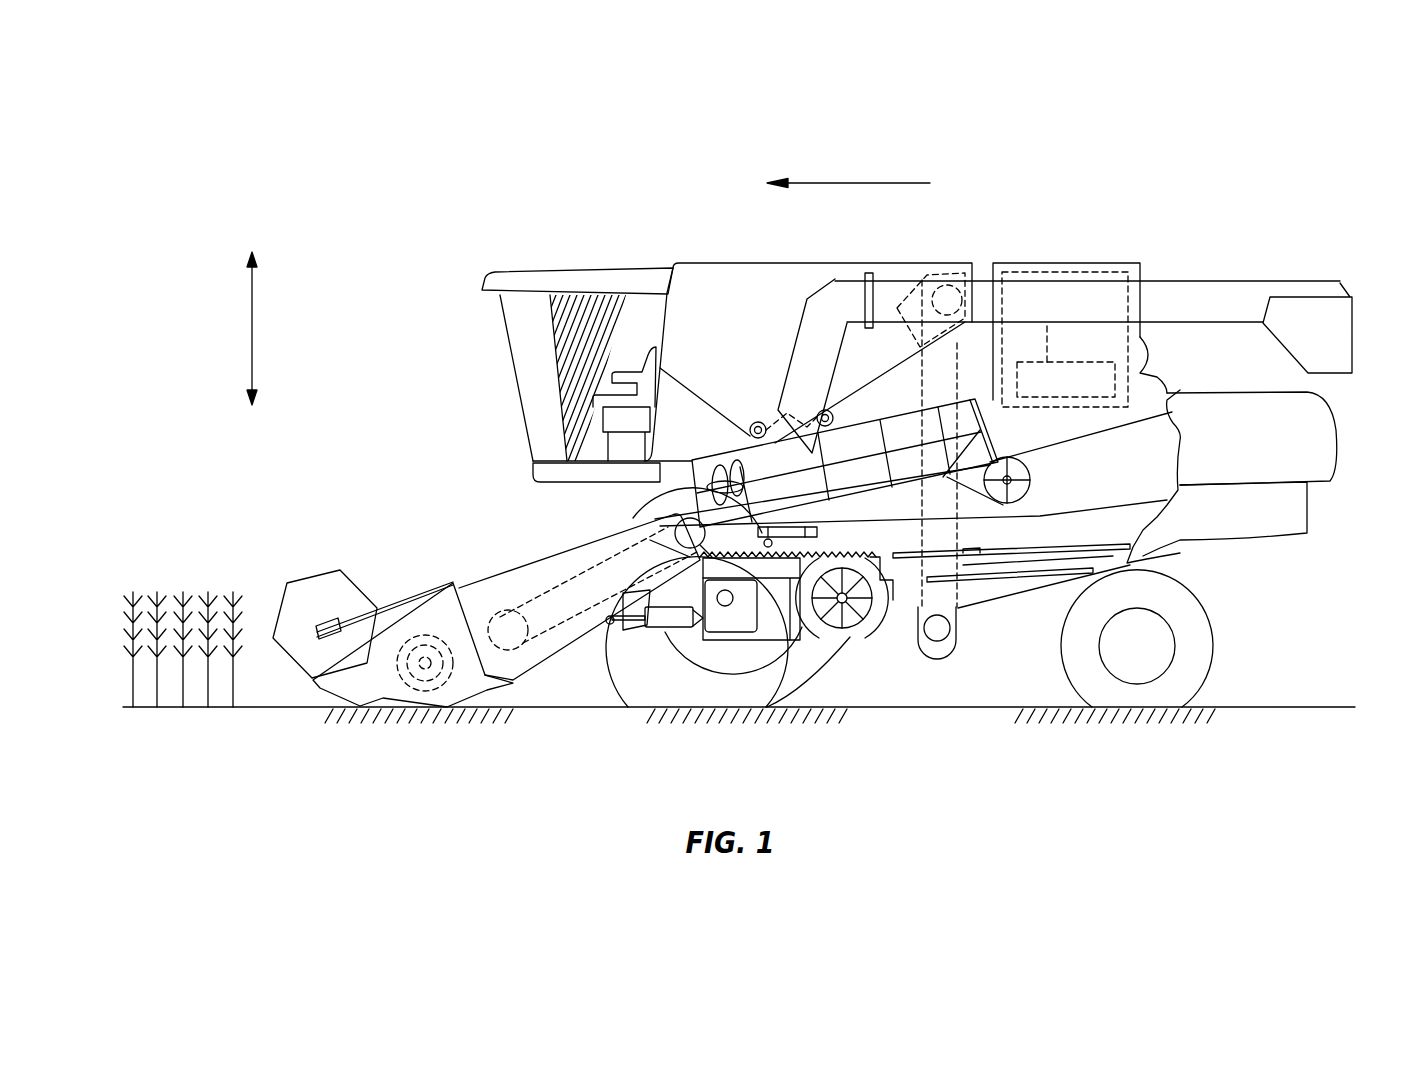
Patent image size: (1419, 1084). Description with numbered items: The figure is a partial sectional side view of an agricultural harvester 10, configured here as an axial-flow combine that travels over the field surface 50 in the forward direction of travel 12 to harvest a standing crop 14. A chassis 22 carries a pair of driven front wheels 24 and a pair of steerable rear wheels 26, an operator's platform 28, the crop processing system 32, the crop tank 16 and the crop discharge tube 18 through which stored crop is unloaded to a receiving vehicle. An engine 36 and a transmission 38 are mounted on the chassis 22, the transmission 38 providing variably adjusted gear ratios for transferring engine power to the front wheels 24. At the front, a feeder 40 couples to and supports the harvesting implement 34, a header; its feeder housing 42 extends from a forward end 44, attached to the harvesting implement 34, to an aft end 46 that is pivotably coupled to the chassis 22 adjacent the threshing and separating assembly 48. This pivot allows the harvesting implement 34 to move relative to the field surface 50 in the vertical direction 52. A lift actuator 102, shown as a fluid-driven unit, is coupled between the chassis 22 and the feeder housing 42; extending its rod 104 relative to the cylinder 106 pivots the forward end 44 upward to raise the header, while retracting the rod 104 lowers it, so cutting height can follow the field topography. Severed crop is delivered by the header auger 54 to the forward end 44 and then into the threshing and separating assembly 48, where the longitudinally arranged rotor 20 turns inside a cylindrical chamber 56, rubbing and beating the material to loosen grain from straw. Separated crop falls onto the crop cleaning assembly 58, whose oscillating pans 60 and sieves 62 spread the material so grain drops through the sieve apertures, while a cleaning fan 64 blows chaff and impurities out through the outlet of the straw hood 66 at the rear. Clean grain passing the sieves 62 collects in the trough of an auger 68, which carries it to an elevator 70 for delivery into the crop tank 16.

The agricultural harvester 10 is at (541, 238).
The forward direction of travel 12 is at (865, 183).
The crop 14 is at (197, 578).
The crop tank 16 is at (745, 263).
The crop discharge tube 18 is at (1187, 291).
The rotor 20 is at (722, 463).
The chassis 22 is at (1143, 561).
The front wheels 24 is at (672, 678).
The rear wheels 26 is at (1197, 650).
The operator's platform 28 is at (537, 470).
The crop processing system 32 is at (1045, 500).
The harvesting implement 34 is at (313, 560).
The engine 36 is at (1033, 262).
The transmission 38 is at (1047, 322).
The feeder 40 is at (522, 373).
The feeder housing 42 is at (556, 547).
The forward end 44 is at (463, 613).
The aft end 46 is at (667, 510).
The threshing and separating assembly 48 is at (854, 451).
The field surface 50 is at (1283, 705).
The vertical direction 52 is at (252, 347).
The header auger 54 is at (425, 690).
The cylindrical chamber 56 is at (905, 418).
The crop cleaning assembly 58 is at (908, 650).
The pans 60 is at (852, 550).
The sieves 62 is at (968, 553).
The cleaning fan 64 is at (848, 630).
The straw hood 66 is at (1318, 447).
The auger 68 is at (935, 634).
The elevator 70 is at (957, 343).
The lift actuator 102 is at (667, 627).
The rod 104 is at (630, 590).
The cylinder 106 is at (688, 625).